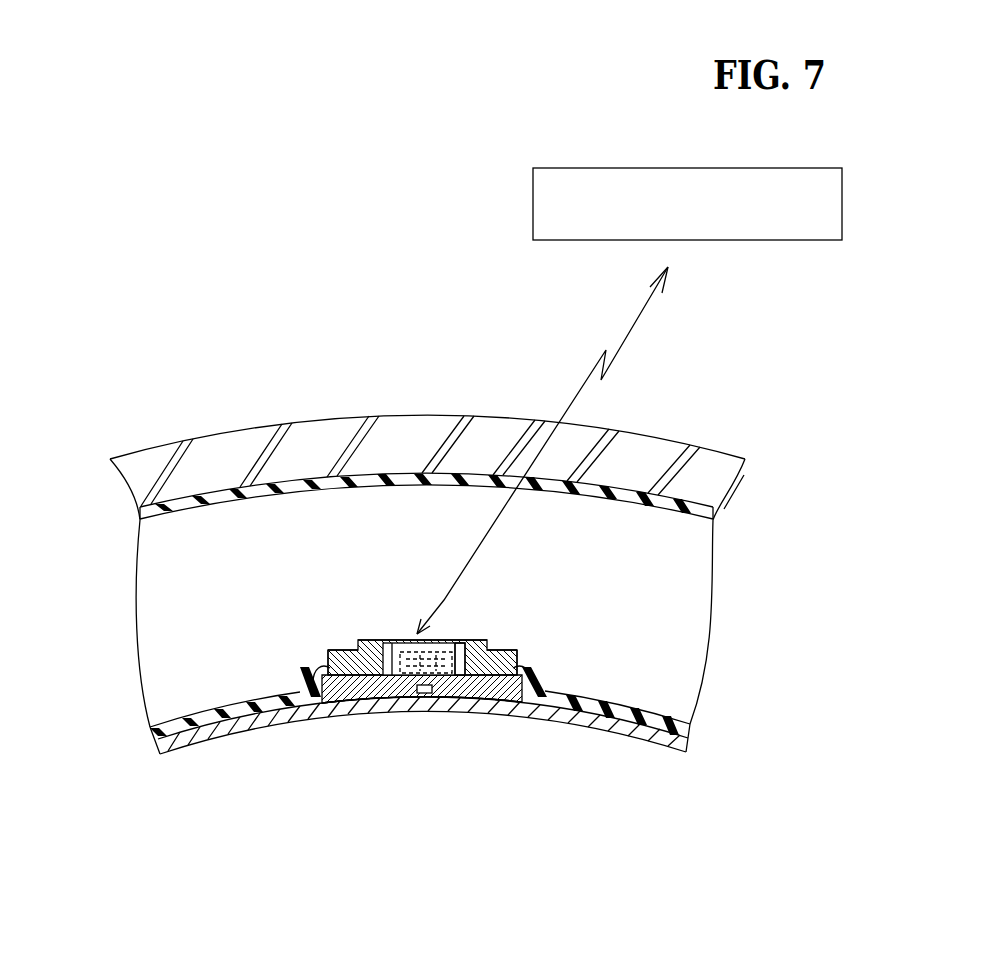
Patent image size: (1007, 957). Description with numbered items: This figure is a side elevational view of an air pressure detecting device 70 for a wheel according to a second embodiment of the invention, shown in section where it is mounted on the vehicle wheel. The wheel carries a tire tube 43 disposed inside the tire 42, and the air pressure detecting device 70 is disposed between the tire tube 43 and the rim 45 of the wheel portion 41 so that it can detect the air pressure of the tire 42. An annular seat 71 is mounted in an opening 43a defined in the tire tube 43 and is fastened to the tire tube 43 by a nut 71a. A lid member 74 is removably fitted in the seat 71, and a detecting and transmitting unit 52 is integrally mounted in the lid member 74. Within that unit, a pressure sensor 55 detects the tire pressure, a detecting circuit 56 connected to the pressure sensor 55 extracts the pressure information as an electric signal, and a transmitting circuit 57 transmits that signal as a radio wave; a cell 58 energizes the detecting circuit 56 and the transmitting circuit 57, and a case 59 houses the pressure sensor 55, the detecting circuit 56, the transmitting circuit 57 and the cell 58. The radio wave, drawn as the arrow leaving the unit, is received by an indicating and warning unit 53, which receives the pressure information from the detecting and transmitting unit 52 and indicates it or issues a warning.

The air pressure detecting device 70 is at (228, 258).
The indicating and warning unit 53 is at (530, 202).
The tire 42 is at (655, 437).
The detecting and transmitting unit 52 is at (417, 634).
The case 59 is at (400, 641).
The pressure sensor 55 is at (453, 641).
The nut 71a is at (342, 651).
The opening 43a is at (373, 699).
The cell 58 is at (396, 699).
The detecting circuit 56 is at (426, 696).
The transmitting circuit 57 is at (459, 678).
The annular seat 71 is at (506, 676).
The lid member 74 is at (446, 699).
The wheel portion 41 is at (613, 738).
The rim 45 is at (637, 737).
The tire tube 43 is at (663, 724).